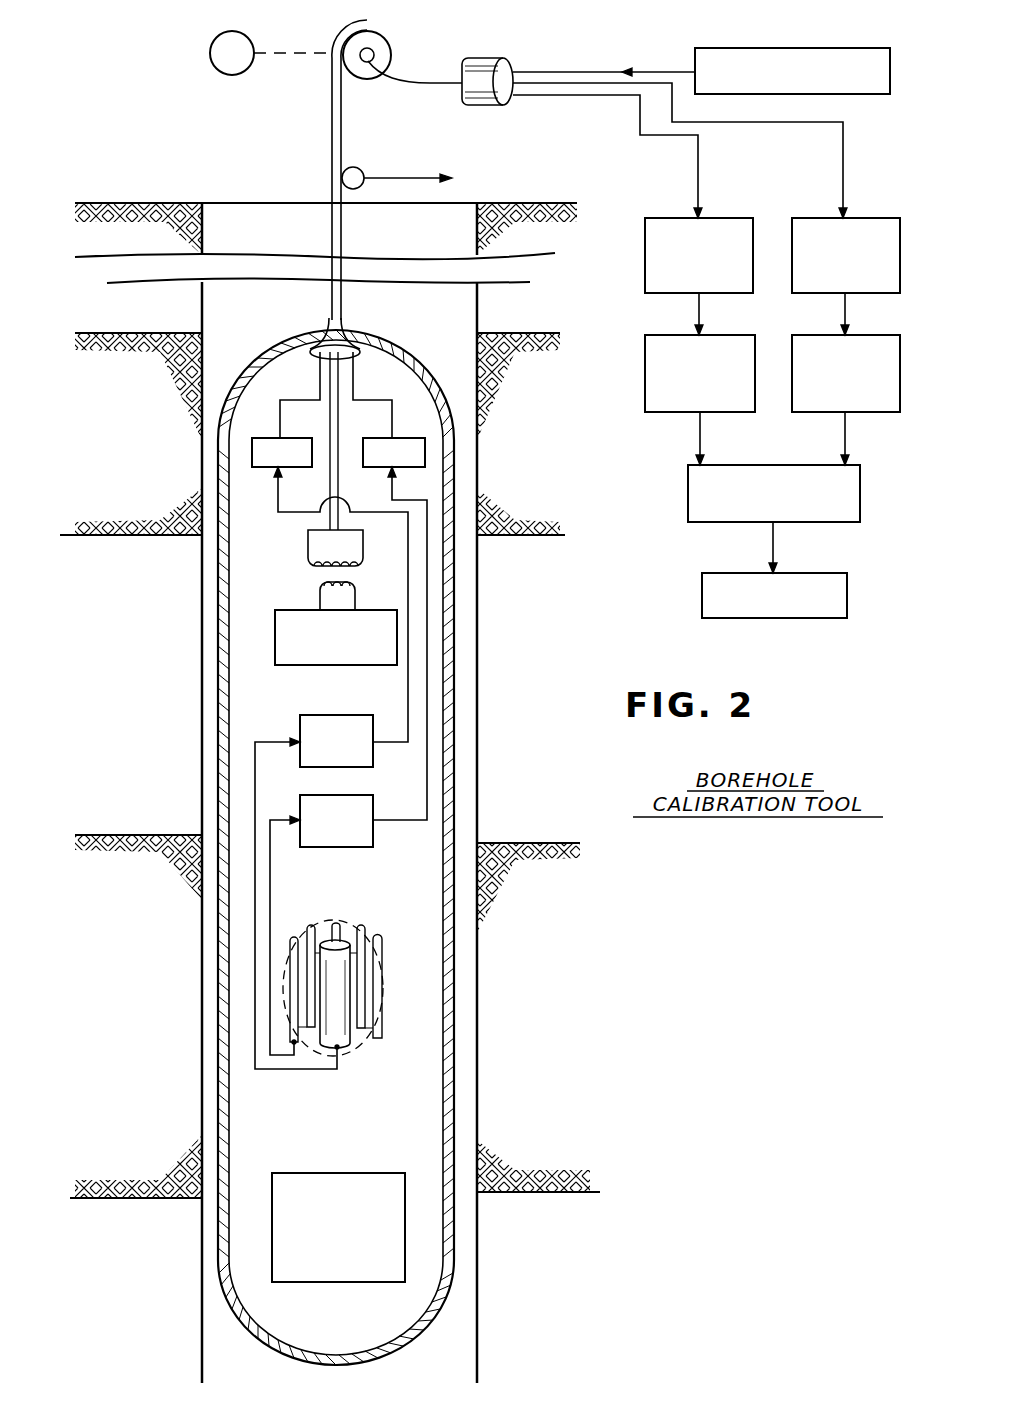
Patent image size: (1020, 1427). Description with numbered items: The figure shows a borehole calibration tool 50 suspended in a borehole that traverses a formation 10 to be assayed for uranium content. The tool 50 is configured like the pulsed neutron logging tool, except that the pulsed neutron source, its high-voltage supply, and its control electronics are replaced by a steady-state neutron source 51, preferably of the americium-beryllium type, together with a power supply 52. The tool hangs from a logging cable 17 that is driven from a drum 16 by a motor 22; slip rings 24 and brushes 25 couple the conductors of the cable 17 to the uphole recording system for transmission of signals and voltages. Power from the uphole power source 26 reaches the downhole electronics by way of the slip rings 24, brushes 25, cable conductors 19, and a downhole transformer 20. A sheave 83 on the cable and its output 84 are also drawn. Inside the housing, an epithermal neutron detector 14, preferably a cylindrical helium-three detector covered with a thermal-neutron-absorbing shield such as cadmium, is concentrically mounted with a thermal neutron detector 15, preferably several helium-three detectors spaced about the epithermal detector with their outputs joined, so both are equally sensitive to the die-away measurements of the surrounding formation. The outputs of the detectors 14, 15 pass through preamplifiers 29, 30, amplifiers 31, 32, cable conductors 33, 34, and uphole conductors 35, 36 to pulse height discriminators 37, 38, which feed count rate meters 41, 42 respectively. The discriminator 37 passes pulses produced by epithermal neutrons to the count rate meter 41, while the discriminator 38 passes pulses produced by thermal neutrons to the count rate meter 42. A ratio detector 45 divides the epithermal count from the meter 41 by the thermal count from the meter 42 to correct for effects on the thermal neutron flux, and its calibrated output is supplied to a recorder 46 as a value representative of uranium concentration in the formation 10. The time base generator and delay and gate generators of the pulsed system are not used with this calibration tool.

The formation 10 is at (150, 1010).
The epithermal neutron detector 14 is at (348, 993).
The thermal neutron detector 15 is at (380, 1040).
The drum 16 is at (387, 38).
The logging cable 17 is at (345, 296).
The cable conductors 19 is at (335, 418).
The downhole transformer 20 is at (398, 583).
The motor 22 is at (212, 44).
The slip rings 24 is at (374, 55).
The brushes 25 is at (405, 83).
The uphole power source 26 is at (832, 47).
The preamplifier 29 is at (327, 713).
The preamplifier 30 is at (362, 793).
The amplifier 31 is at (270, 470).
The amplifier 32 is at (385, 470).
The cable conductor 33 is at (300, 397).
The cable conductor 34 is at (378, 397).
The uphole conductor 35 is at (697, 184).
The uphole conductor 36 is at (815, 125).
The pulse height discriminator 37 is at (725, 218).
The pulse height discriminator 38 is at (873, 218).
The count rate meter 41 is at (743, 333).
The count rate meter 42 is at (888, 333).
The ratio detector 45 is at (863, 487).
The recorder 46 is at (850, 595).
The borehole calibration tool 50 is at (282, 350).
The steady-state neutron source 51 is at (345, 1172).
The power supply 52 is at (305, 608).
The depth measuring wheel 83 is at (362, 170).
The depth signal output 84 is at (410, 173).